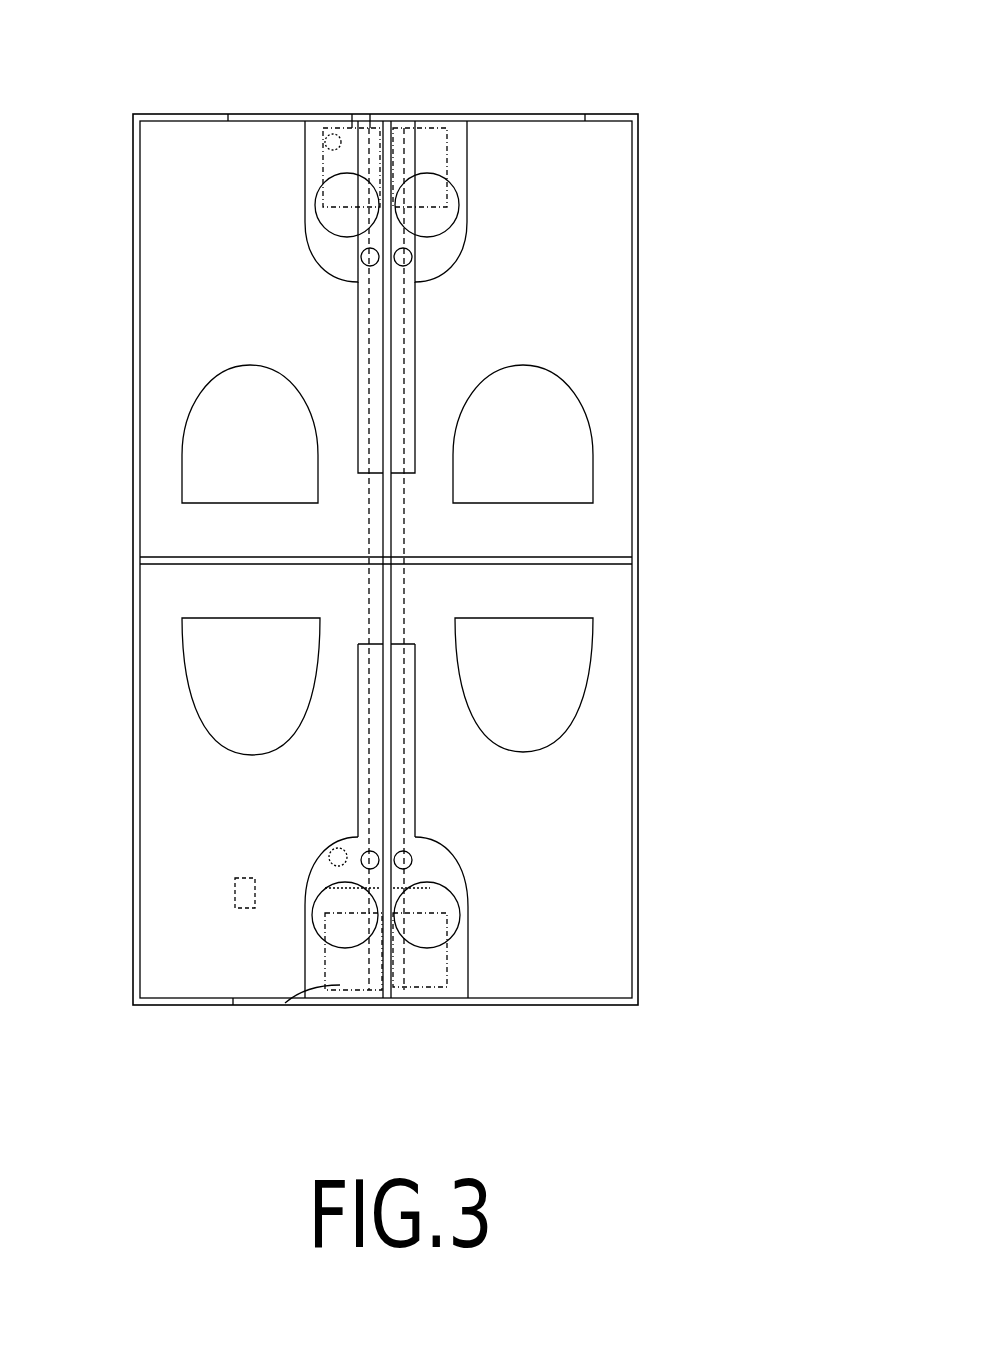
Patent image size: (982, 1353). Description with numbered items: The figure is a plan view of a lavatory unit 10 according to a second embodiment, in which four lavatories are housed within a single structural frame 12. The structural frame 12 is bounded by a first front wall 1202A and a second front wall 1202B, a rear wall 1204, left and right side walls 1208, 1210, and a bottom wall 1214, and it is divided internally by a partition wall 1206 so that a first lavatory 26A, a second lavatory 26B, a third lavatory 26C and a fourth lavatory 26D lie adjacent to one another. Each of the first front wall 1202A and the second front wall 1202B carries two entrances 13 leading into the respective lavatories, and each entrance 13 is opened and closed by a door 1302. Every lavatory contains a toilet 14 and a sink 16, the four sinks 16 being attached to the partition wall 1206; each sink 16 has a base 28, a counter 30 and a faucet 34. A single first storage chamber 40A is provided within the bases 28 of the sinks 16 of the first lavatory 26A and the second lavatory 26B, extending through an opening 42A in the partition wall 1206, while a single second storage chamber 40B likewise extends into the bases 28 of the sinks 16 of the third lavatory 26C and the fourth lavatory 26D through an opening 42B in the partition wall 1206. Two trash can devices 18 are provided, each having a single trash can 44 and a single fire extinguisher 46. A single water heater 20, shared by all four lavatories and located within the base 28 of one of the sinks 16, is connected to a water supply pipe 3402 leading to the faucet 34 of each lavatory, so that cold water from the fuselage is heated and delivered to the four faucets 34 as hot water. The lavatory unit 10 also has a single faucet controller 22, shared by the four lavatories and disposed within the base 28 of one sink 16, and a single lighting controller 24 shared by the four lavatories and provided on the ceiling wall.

The lavatory unit 10 is at (712, 62).
The structural frame 12 is at (643, 190).
The entrance 13 is at (612, 112).
The toilet 14 is at (238, 382).
The sink 16 is at (316, 165).
The trash can device 18 is at (400, 1020).
The water heater 20 is at (285, 1003).
The faucet controller 22 is at (293, 1056).
The lighting controller 24 is at (244, 878).
The first lavatory 26A is at (206, 995).
The second lavatory 26B is at (567, 988).
The third lavatory 26C is at (177, 133).
The fourth lavatory 26D is at (527, 130).
The base 28 is at (312, 215).
The counter 30 is at (410, 328).
The faucet 34 is at (352, 262).
The first storage chamber 40A is at (338, 990).
The second storage chamber 40B is at (330, 135).
The opening 42A is at (393, 928).
The opening 42B is at (397, 197).
The trash can 44 is at (352, 114).
The fire extinguisher 46 is at (371, 114).
The first front wall 1202A is at (462, 998).
The second front wall 1202B is at (410, 100).
The rear wall 1204 is at (578, 556).
The partition wall 1206 is at (392, 602).
The left side wall 1208 is at (134, 706).
The right side wall 1210 is at (640, 697).
The bottom wall 1214 is at (600, 802).
The door 1302 is at (228, 114).
The water supply pipe 3402 is at (336, 852).